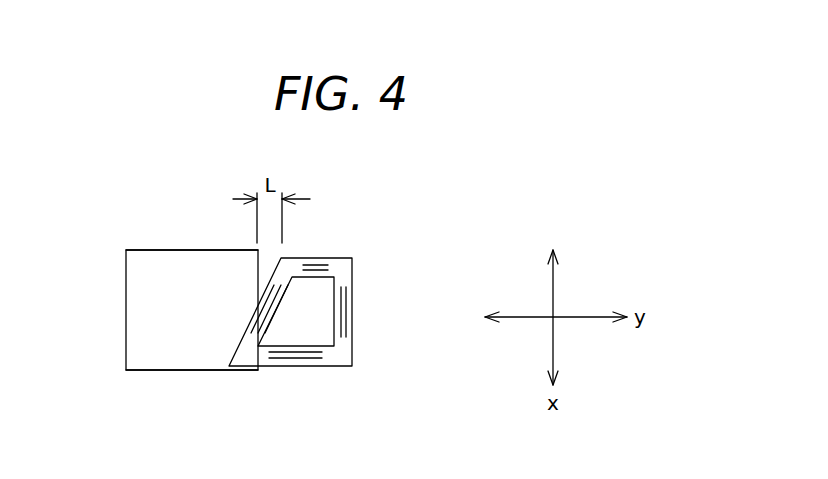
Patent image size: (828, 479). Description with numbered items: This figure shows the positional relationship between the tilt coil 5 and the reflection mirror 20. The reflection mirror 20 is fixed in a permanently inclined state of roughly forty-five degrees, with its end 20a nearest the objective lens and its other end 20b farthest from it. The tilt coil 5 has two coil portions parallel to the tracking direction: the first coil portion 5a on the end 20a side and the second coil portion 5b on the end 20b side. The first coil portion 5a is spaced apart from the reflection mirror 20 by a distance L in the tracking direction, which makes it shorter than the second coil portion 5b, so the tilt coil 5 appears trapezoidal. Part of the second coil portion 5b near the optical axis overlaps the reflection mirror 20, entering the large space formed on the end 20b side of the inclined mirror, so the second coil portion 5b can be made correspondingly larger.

The reflection mirror 20 is at (133, 308).
The end of the reflection mirror 20a is at (190, 250).
The end of the reflection mirror 20b is at (185, 370).
The tilt coil 5 is at (347, 310).
The first coil portion 5a is at (317, 265).
The second coil portion 5b is at (298, 358).